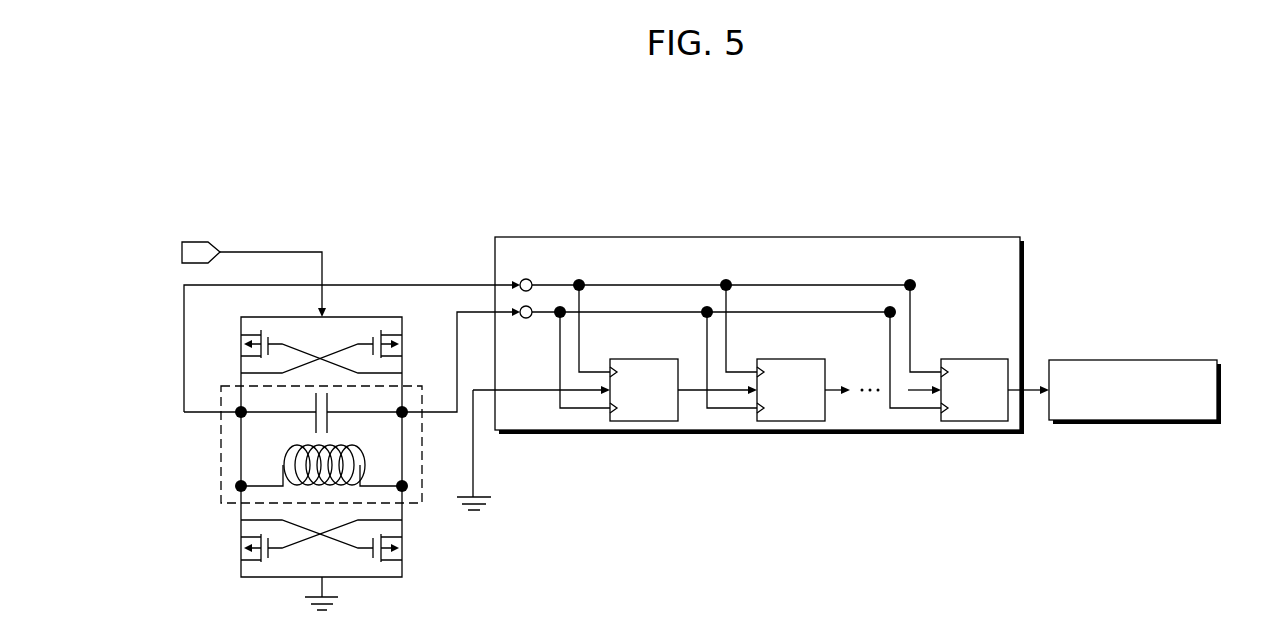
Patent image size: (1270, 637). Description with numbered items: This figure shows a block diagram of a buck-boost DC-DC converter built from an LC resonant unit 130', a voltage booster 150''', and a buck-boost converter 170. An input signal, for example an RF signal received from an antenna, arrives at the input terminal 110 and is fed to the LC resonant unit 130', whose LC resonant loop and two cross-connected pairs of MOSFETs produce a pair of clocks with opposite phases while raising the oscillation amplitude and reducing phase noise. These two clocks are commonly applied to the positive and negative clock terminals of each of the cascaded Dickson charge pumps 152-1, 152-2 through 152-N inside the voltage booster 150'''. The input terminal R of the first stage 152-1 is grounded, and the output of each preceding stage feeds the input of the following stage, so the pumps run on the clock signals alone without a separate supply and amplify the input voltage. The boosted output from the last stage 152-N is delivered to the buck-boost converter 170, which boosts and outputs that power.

The input terminal 110 is at (197, 242).
The LC resonant unit 130' is at (352, 445).
The voltage booster 150''' is at (740, 362).
The first stage charge pump 152-1 is at (647, 358).
The second stage charge pump 152-2 is at (794, 358).
The N-th stage charge pump 152-N is at (977, 358).
The buck-boost converter 170 is at (1145, 360).